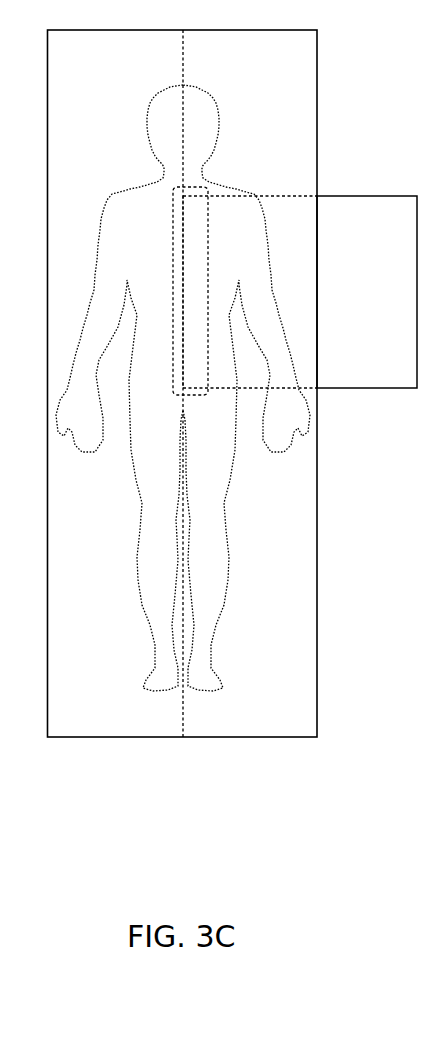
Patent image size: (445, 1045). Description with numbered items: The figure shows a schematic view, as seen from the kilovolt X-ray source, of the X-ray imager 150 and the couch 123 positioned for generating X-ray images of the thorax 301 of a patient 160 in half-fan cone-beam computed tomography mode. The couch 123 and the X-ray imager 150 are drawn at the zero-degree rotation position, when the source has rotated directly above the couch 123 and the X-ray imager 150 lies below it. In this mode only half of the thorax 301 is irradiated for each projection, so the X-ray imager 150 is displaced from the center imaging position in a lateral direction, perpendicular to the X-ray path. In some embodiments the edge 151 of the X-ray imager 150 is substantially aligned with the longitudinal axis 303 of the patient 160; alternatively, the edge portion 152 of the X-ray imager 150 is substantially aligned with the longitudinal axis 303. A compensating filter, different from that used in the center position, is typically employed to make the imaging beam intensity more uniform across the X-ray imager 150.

The couch 123 is at (297, 726).
The X-ray imager 150 is at (331, 196).
The edge 151 is at (173, 232).
The edge portion 152 is at (173, 305).
The patient 160 is at (183, 388).
The thorax 301 is at (104, 188).
The longitudinal axis 303 is at (185, 70).